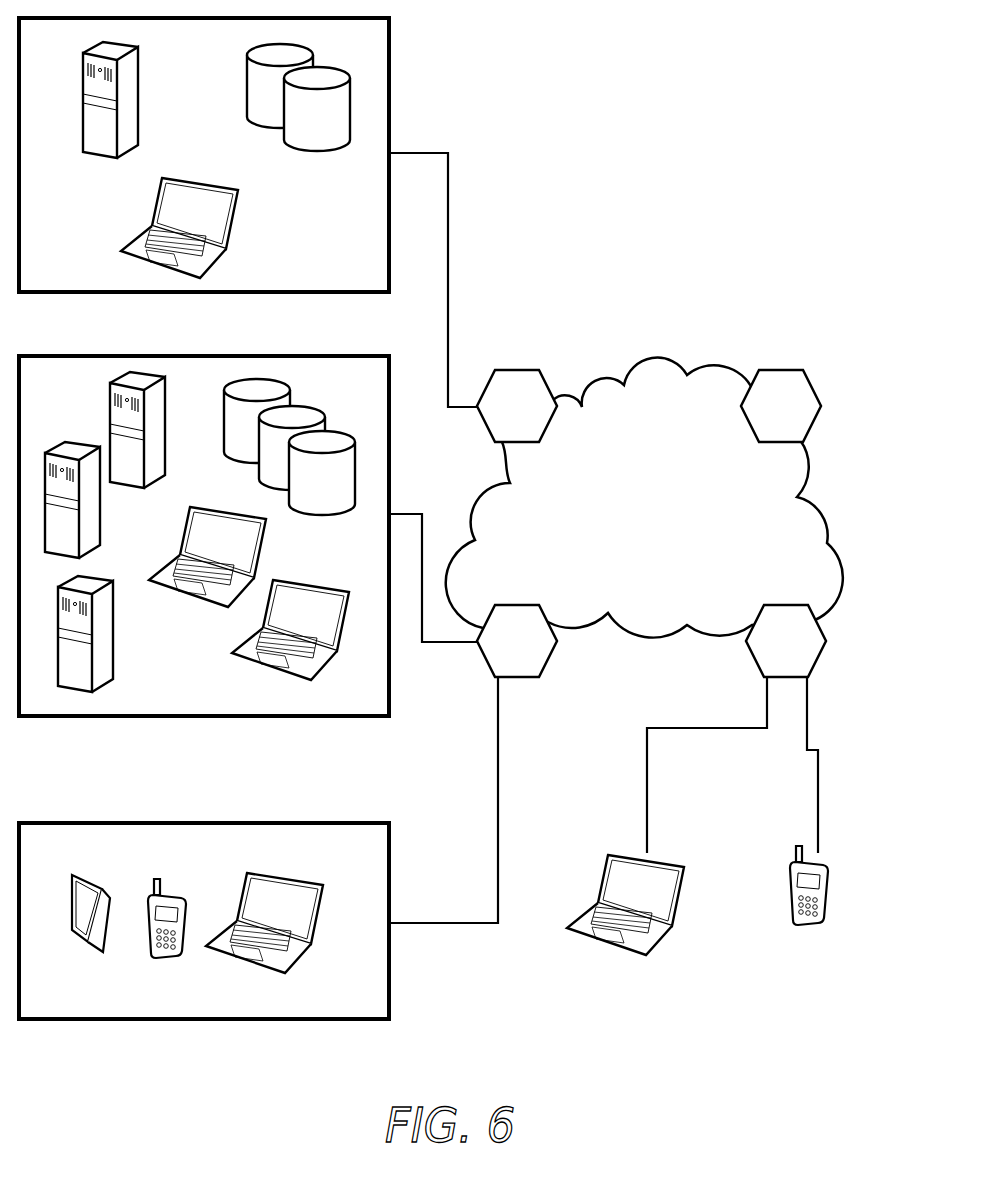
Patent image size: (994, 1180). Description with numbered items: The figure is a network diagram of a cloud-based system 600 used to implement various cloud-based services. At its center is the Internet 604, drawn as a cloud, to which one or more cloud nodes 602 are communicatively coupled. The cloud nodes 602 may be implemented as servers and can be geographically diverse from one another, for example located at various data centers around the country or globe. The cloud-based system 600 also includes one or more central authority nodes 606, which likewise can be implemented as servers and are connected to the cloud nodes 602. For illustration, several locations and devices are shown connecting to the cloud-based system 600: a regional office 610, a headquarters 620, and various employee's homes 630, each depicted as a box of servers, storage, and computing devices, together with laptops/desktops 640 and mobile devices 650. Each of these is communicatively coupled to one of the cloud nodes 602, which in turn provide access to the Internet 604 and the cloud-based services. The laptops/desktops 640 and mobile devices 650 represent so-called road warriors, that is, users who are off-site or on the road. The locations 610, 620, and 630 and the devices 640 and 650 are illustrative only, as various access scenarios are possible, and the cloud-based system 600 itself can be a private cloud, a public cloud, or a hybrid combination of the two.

The cloud-based system 600 is at (631, 87).
The cloud node 602 is at (513, 370).
The Internet 604 is at (670, 355).
The central authority node 606 is at (783, 370).
The regional office 610 is at (392, 65).
The headquarters 620 is at (392, 428).
The employee's homes 630 is at (392, 962).
The laptops/desktops 640 is at (668, 860).
The mobile devices 650 is at (788, 908).